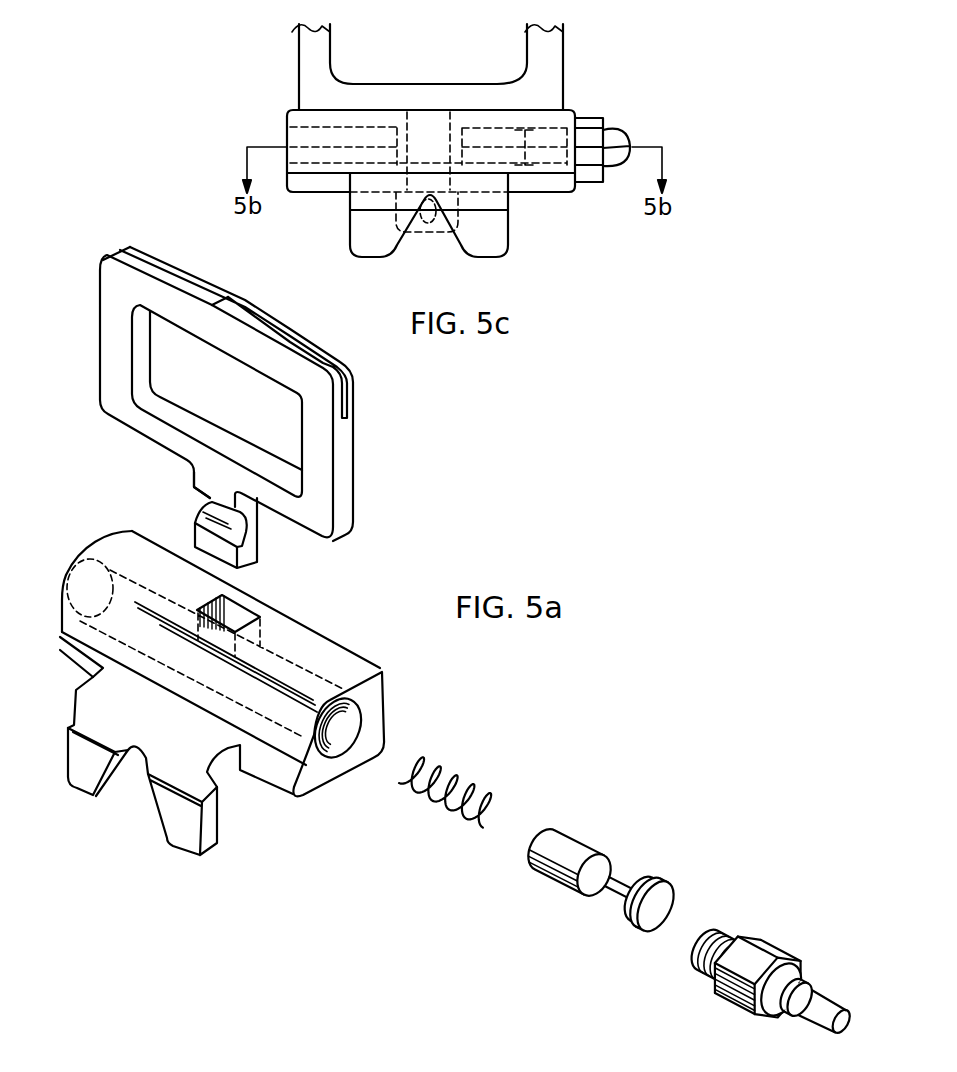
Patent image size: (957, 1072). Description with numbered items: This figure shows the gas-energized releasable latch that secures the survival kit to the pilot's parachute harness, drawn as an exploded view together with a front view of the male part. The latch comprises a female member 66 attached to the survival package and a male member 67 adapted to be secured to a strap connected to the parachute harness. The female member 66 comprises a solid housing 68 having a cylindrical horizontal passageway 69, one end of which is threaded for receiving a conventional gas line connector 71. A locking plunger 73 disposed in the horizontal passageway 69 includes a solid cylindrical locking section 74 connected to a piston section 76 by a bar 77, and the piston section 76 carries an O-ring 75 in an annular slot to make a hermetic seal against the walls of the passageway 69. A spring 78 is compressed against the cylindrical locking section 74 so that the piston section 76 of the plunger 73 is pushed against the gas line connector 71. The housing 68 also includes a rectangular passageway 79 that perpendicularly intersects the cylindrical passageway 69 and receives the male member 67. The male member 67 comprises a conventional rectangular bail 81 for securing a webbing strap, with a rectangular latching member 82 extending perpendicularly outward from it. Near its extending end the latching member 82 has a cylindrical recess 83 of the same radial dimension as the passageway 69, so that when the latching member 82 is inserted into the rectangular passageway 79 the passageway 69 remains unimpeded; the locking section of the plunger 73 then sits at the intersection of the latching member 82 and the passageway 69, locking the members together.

In FIG. 5A, the female member 66 is at (247, 693).
In FIG. 5C, the male member 67 is at (578, 82).
In FIG. 5A, the male member 67 is at (362, 437).
In FIG. 5A, the solid housing 68 is at (348, 667).
In FIG. 5A, the cylindrical horizontal passageway 69 is at (360, 723).
In FIG. 5A, the gas line connector 71 is at (733, 928).
In FIG. 5A, the locking plunger 73 is at (605, 898).
In FIG. 5A, the solid cylindrical locking section 74 is at (553, 873).
In FIG. 5A, the O-ring 75 is at (630, 913).
In FIG. 5A, the piston section 76 is at (653, 930).
In FIG. 5A, the bar 77 is at (617, 883).
In FIG. 5A, the spring 78 is at (462, 783).
In FIG. 5A, the rectangular passageway 79 is at (240, 610).
In FIG. 5C, the rectangular bail 81 is at (553, 47).
In FIG. 5A, the rectangular bail 81 is at (288, 337).
In FIG. 5A, the rectangular latching member 82 is at (200, 487).
In FIG. 5A, the cylindrical recess 83 is at (240, 547).